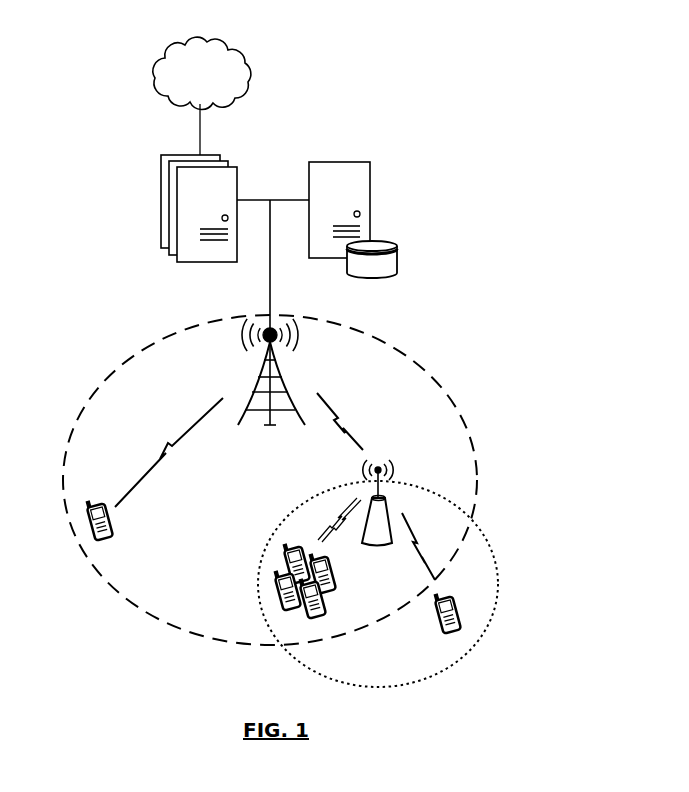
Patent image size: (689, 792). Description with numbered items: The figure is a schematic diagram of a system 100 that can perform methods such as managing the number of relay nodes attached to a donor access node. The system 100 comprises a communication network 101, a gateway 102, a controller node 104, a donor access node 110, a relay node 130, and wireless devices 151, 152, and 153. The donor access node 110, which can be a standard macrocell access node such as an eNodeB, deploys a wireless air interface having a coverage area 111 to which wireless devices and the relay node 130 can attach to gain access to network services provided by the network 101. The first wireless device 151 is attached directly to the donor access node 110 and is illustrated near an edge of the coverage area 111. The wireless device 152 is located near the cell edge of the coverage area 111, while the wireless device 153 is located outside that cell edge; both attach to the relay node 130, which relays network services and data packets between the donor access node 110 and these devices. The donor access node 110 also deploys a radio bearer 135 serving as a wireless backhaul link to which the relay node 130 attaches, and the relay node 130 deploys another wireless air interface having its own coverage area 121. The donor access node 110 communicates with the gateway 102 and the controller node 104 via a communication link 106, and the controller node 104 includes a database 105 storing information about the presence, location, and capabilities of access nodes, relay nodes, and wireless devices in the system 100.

The system 100 is at (323, 35).
The communication network 101 is at (202, 96).
The gateway 102 is at (161, 155).
The controller node 104 is at (370, 162).
The database 105 is at (397, 246).
The communication link 106 is at (270, 277).
The donor access node 110 is at (261, 379).
The coverage area 111 is at (130, 603).
The coverage area 121 is at (480, 532).
The relay node 130 is at (388, 497).
The radio bearer 135 is at (341, 428).
The wireless device 151 is at (112, 537).
The wireless device 152 is at (346, 572).
The wireless device 153 is at (445, 633).